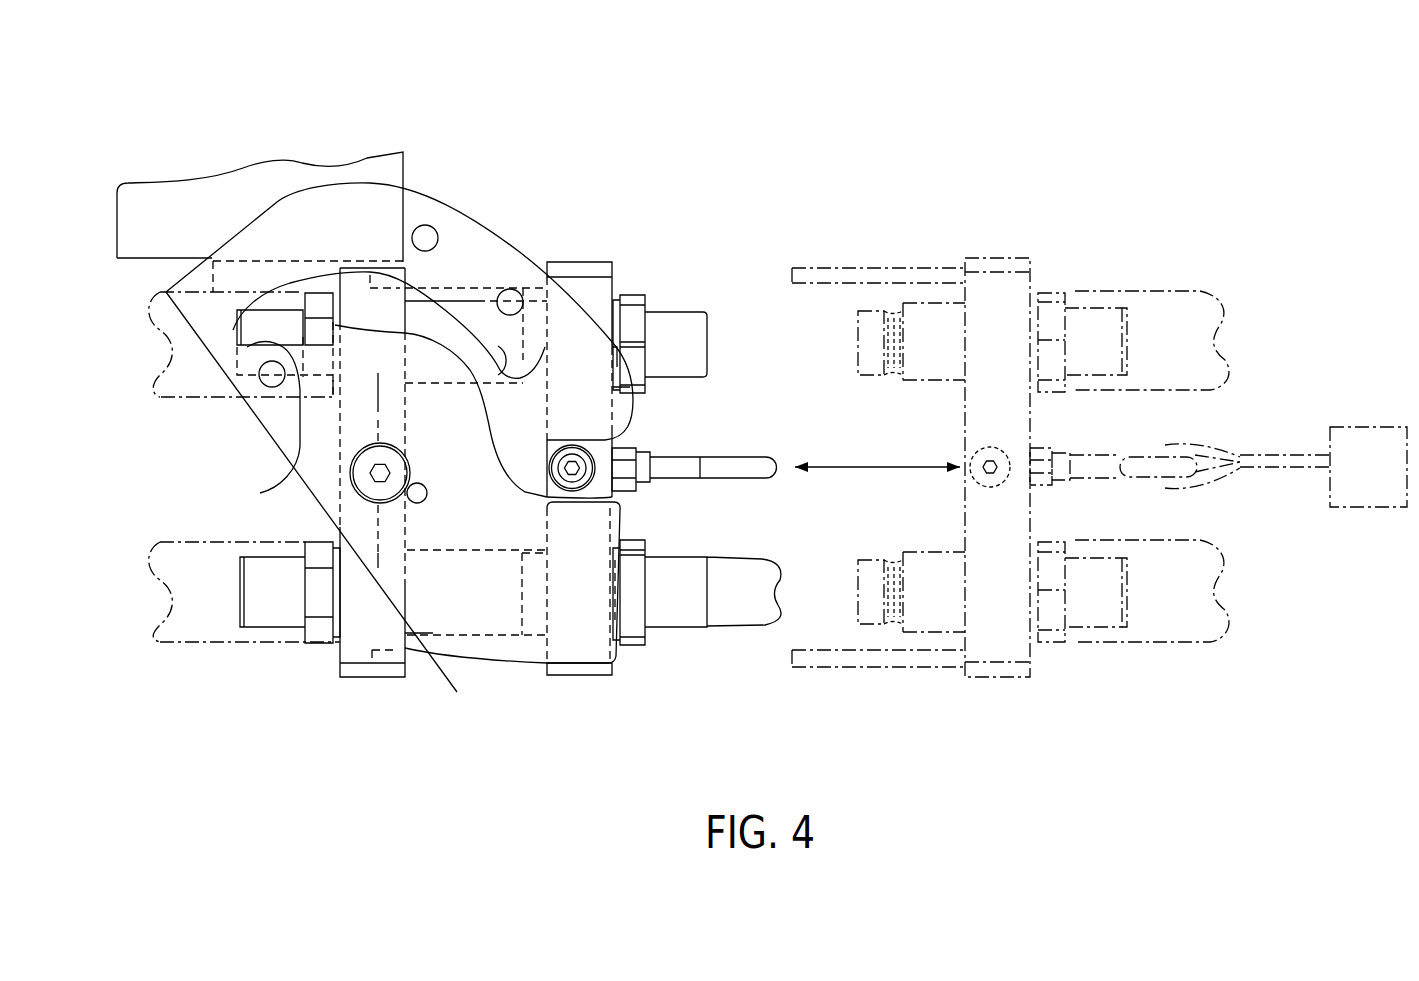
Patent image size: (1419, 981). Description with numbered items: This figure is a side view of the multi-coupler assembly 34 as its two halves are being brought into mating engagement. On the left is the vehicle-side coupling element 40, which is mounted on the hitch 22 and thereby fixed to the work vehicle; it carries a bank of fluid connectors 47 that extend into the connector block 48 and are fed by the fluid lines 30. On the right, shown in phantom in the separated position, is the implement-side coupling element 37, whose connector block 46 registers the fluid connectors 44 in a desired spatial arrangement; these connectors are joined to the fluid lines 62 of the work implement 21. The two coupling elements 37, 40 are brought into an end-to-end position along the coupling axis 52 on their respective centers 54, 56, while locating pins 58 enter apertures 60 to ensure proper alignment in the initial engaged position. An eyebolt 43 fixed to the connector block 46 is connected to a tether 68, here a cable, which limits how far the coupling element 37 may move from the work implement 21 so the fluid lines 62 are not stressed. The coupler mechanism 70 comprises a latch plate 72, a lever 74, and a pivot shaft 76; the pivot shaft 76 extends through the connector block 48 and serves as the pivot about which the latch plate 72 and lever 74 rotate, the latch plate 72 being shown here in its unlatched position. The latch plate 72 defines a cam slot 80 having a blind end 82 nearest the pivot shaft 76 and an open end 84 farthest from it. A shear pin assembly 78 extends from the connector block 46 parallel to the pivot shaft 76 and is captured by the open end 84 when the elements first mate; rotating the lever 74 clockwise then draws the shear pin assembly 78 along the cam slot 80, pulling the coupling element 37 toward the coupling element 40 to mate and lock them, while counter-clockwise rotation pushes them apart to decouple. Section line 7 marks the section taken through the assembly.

The section line 7 is at (433, 568).
The work implement 21 is at (1368, 507).
The hitch 22 is at (150, 183).
The fluid lines 30 is at (150, 353).
The multi-coupler assembly 34 is at (182, 500).
The coupling element 37 is at (582, 690).
The coupling element 40 is at (357, 250).
The eyebolt 43 is at (742, 484).
The fluid connectors 44 is at (931, 642).
The connector block 46 is at (590, 600).
The fluid connectors 47 is at (266, 636).
The connector block 48 is at (383, 640).
The coupling axis 52 is at (880, 467).
The center 54 is at (838, 342).
The center 56 is at (855, 592).
The locating pins 58 is at (868, 267).
The apertures 60 is at (410, 665).
The fluid lines 62 is at (1165, 287).
The tether 68 is at (1287, 455).
The coupler mechanism 70 is at (648, 412).
The latch plate 72 is at (519, 245).
The lever 74 is at (740, 628).
The pivot shaft 76 is at (400, 458).
The shear pin assembly 78 is at (582, 478).
The cam slot 80 is at (577, 285).
The blind end 82 is at (270, 489).
The open end 84 is at (587, 437).